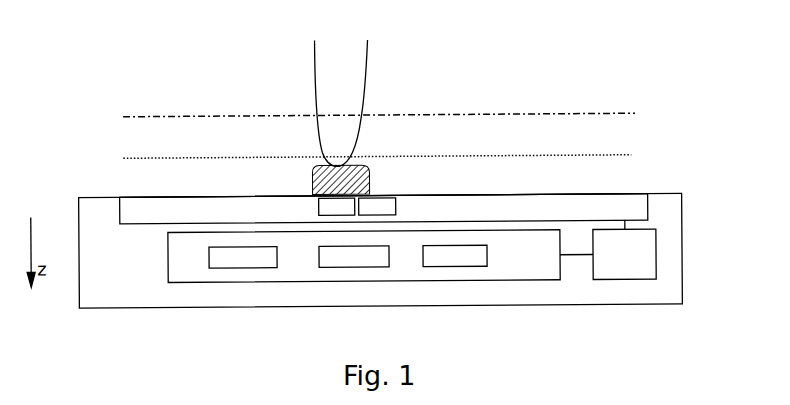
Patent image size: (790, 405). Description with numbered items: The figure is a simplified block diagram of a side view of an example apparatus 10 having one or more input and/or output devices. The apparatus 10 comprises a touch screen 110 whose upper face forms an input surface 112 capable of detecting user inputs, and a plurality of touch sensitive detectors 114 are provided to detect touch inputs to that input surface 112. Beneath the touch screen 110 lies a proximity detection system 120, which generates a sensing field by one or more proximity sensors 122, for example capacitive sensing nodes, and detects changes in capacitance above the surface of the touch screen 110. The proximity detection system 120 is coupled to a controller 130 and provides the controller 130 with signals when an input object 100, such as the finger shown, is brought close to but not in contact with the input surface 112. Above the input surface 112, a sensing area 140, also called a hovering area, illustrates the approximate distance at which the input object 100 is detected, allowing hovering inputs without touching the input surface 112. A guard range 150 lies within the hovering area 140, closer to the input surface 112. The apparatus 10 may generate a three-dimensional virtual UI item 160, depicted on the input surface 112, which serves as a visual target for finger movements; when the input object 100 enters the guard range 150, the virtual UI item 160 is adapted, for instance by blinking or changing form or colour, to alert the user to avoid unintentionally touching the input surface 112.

The apparatus 10 is at (675, 272).
The input object 100 is at (335, 87).
The touch screen 110 is at (145, 203).
The input surface 112 is at (230, 195).
The touch sensitive detectors 114 is at (376, 212).
The proximity detection system 120 is at (450, 275).
The proximity sensors 122 is at (213, 260).
The controller 130 is at (608, 275).
The sensing area 140 is at (617, 126).
The guard range 150 is at (617, 173).
The three-dimensional virtual UI item 160 is at (368, 180).